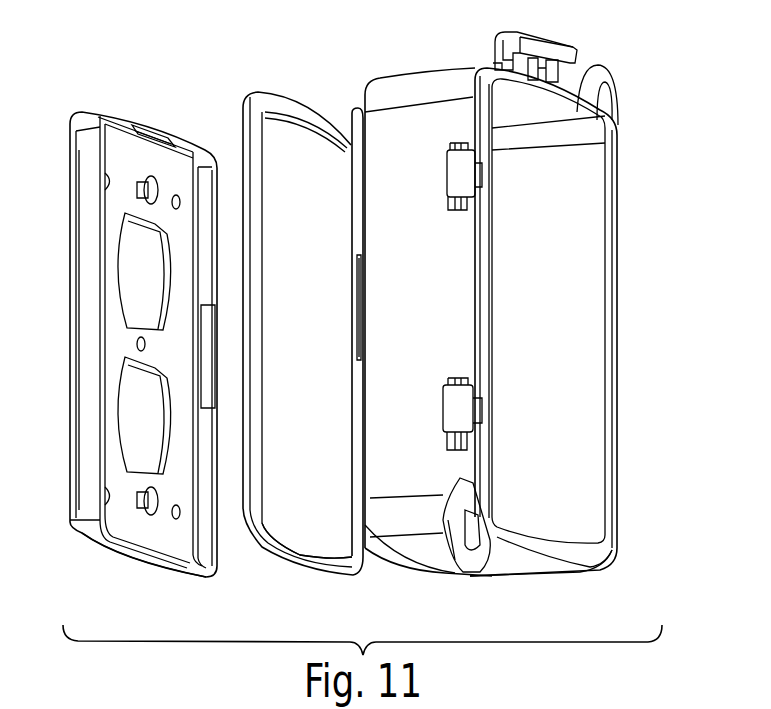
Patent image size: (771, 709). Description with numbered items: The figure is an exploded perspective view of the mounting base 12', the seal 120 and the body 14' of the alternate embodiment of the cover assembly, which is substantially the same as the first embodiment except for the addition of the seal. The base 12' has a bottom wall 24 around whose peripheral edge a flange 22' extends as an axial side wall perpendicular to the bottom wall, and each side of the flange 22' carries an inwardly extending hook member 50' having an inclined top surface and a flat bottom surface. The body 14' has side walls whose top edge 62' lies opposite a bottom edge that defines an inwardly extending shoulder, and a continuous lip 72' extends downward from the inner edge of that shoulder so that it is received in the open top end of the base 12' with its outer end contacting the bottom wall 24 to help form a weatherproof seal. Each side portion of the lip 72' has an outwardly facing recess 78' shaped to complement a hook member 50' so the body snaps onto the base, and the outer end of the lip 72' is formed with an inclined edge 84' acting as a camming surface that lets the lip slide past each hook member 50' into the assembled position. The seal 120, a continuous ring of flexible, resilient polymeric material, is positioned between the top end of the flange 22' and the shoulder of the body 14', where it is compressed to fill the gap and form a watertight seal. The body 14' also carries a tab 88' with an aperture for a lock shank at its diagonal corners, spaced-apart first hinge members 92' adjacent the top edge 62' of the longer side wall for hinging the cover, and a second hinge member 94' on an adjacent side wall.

The mounting base 12' is at (165, 370).
The hook member 50' is at (110, 323).
The flange 22' is at (167, 343).
The bottom wall 24 is at (170, 539).
The lip 72' is at (342, 358).
The recess 78' is at (322, 307).
The inclined edge 84' is at (307, 507).
The seal 120 is at (370, 570).
The body 14' is at (532, 320).
The top edge 62' is at (564, 584).
The tab 88' is at (571, 347).
The second hinge member 94' is at (494, 46).
The first hinge members 92' is at (428, 296).